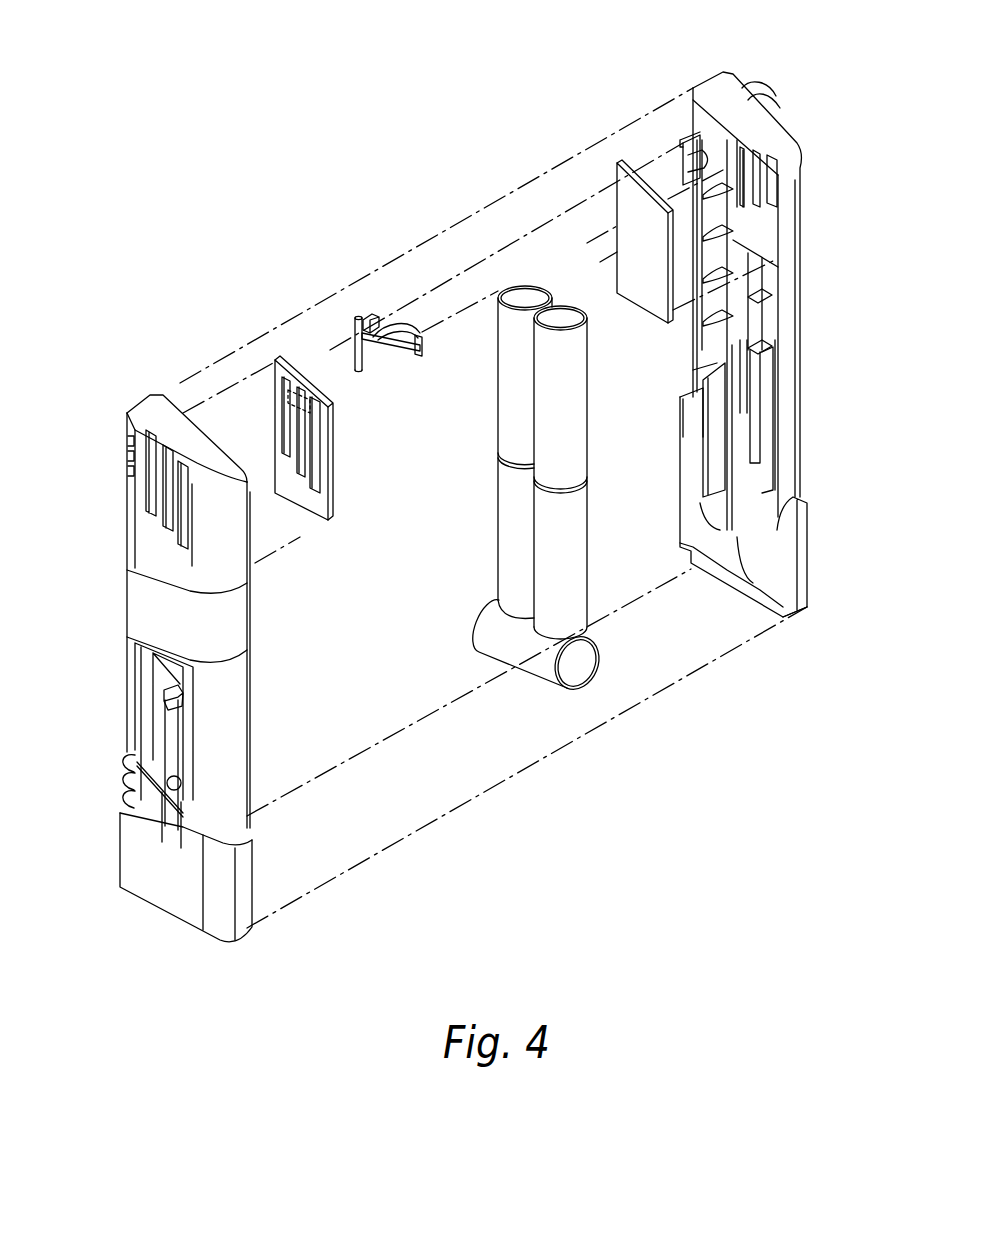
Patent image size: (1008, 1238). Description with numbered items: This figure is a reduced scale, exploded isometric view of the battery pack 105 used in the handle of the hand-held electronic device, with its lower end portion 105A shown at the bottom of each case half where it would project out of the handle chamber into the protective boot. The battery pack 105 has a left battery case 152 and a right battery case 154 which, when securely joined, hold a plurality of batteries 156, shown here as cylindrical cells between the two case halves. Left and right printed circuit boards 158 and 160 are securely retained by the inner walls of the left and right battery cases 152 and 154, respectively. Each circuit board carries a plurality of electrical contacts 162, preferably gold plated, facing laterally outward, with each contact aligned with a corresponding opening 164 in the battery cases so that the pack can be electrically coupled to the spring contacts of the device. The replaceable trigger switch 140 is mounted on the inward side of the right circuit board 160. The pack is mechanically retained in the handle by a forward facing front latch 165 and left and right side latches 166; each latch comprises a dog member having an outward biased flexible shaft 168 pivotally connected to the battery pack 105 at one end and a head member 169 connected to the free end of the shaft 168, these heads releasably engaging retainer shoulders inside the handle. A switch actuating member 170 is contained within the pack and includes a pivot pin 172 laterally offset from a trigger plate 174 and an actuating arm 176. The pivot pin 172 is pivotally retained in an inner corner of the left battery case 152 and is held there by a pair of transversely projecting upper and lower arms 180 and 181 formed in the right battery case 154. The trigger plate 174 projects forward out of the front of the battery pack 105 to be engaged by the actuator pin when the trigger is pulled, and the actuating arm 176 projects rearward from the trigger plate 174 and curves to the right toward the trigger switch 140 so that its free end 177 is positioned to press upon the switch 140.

The battery pack 105 is at (192, 290).
The lower end portion of the battery pack 105A is at (165, 898).
The replaceable trigger switch 140 is at (325, 437).
The left battery case 152 is at (157, 607).
The right battery case 154 is at (795, 150).
The batteries 156 is at (497, 420).
The left printed circuit board 158 is at (277, 358).
The right printed circuit board 160 is at (628, 200).
The electrical contacts 162 is at (285, 455).
The openings 164 is at (180, 537).
The front latch 165 is at (693, 413).
The side latches 166 is at (177, 758).
The flexible shaft 168 is at (180, 790).
The head member 169 is at (177, 700).
The switch actuating member 170 is at (357, 356).
The pivot pin 172 is at (362, 315).
The trigger plate 174 is at (378, 316).
The actuating arm 176 is at (422, 336).
The free end of the actuating arm 177 is at (420, 352).
The upper arm 180 is at (700, 135).
The lower arm 181 is at (688, 168).